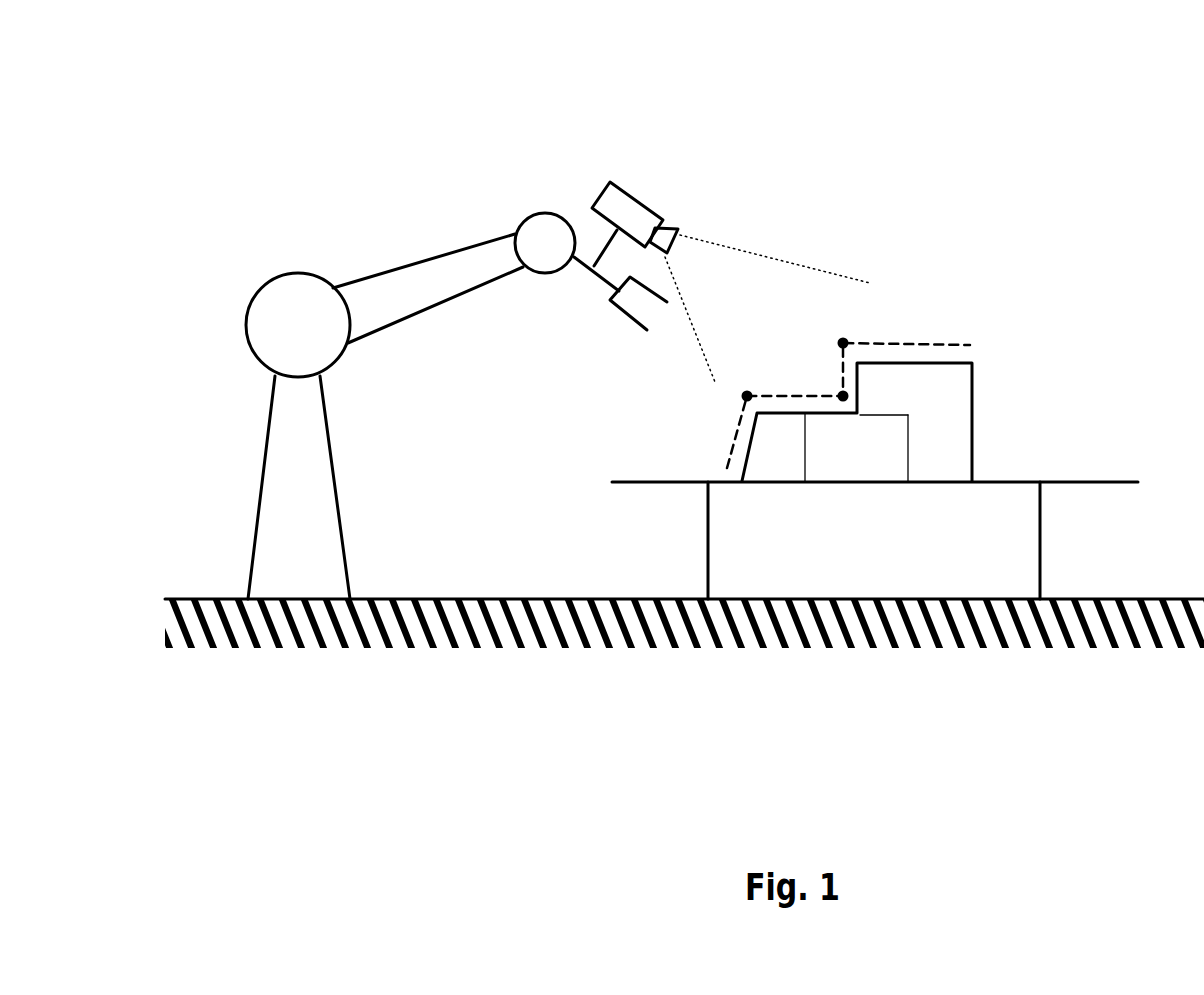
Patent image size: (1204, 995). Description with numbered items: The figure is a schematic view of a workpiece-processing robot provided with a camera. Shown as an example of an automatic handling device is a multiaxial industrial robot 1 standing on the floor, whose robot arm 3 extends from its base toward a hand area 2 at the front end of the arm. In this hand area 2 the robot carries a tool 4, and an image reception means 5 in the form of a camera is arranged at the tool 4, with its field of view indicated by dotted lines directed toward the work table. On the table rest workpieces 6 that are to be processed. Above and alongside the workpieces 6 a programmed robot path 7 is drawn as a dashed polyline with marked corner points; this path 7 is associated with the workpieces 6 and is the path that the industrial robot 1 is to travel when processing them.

The industrial robot 1 is at (226, 461).
The hand area 2 is at (546, 262).
The robot arm 3 is at (414, 297).
The tool 4 is at (627, 332).
The image reception means 5 is at (612, 165).
The workpieces 6 is at (958, 433).
The programmed robot path 7 is at (918, 322).